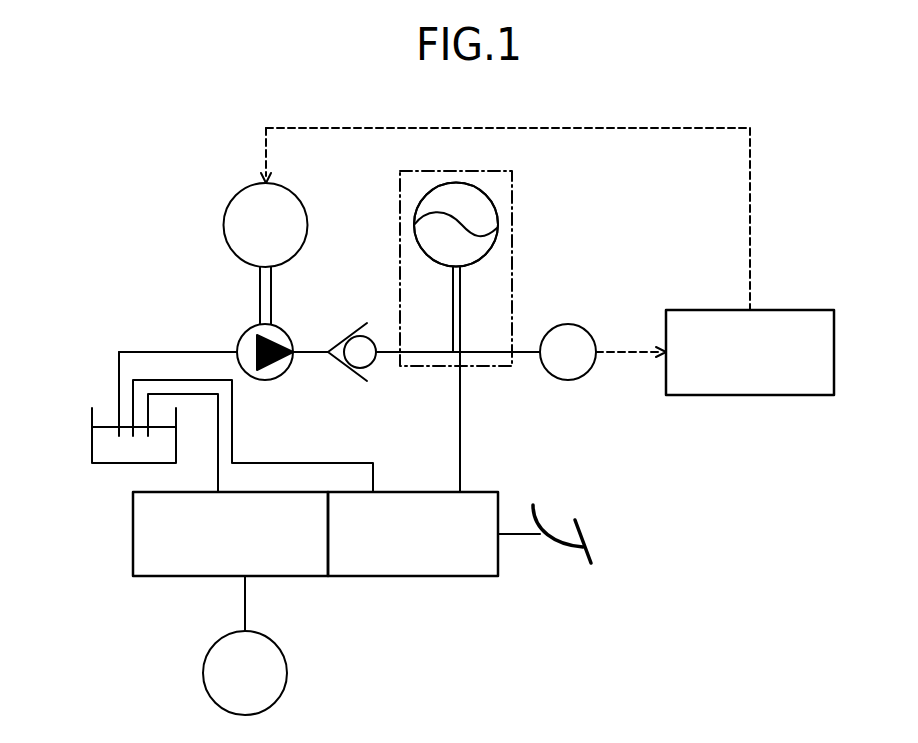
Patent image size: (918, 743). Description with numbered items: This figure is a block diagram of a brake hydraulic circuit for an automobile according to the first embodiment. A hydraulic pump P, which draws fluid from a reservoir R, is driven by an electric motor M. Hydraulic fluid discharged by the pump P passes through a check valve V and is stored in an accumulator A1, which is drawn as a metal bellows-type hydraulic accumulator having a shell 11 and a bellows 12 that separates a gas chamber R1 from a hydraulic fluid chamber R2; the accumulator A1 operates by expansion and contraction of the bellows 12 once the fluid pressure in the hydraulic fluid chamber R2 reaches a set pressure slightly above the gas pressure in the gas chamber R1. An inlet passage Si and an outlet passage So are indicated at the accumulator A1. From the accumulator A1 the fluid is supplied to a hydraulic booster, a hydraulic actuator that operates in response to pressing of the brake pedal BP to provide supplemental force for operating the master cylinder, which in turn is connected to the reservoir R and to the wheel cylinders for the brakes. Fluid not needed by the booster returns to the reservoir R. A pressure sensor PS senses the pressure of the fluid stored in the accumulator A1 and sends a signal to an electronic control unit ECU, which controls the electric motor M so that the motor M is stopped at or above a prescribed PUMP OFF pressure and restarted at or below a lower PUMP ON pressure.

The electric motor M is at (223, 225).
The hydraulic pump P is at (263, 380).
The check valve V is at (350, 364).
The accumulator A1 is at (500, 171).
The shell 11 is at (424, 195).
The gas chamber R1 is at (494, 212).
The hydraulic fluid chamber R2 is at (418, 236).
The bellows 12 is at (480, 238).
The inlet passage Si is at (453, 293).
The outlet passage So is at (460, 306).
The pressure sensor PS is at (573, 325).
The electronic control unit ECU is at (735, 396).
The reservoir R is at (92, 443).
The brake pedal BP is at (593, 548).